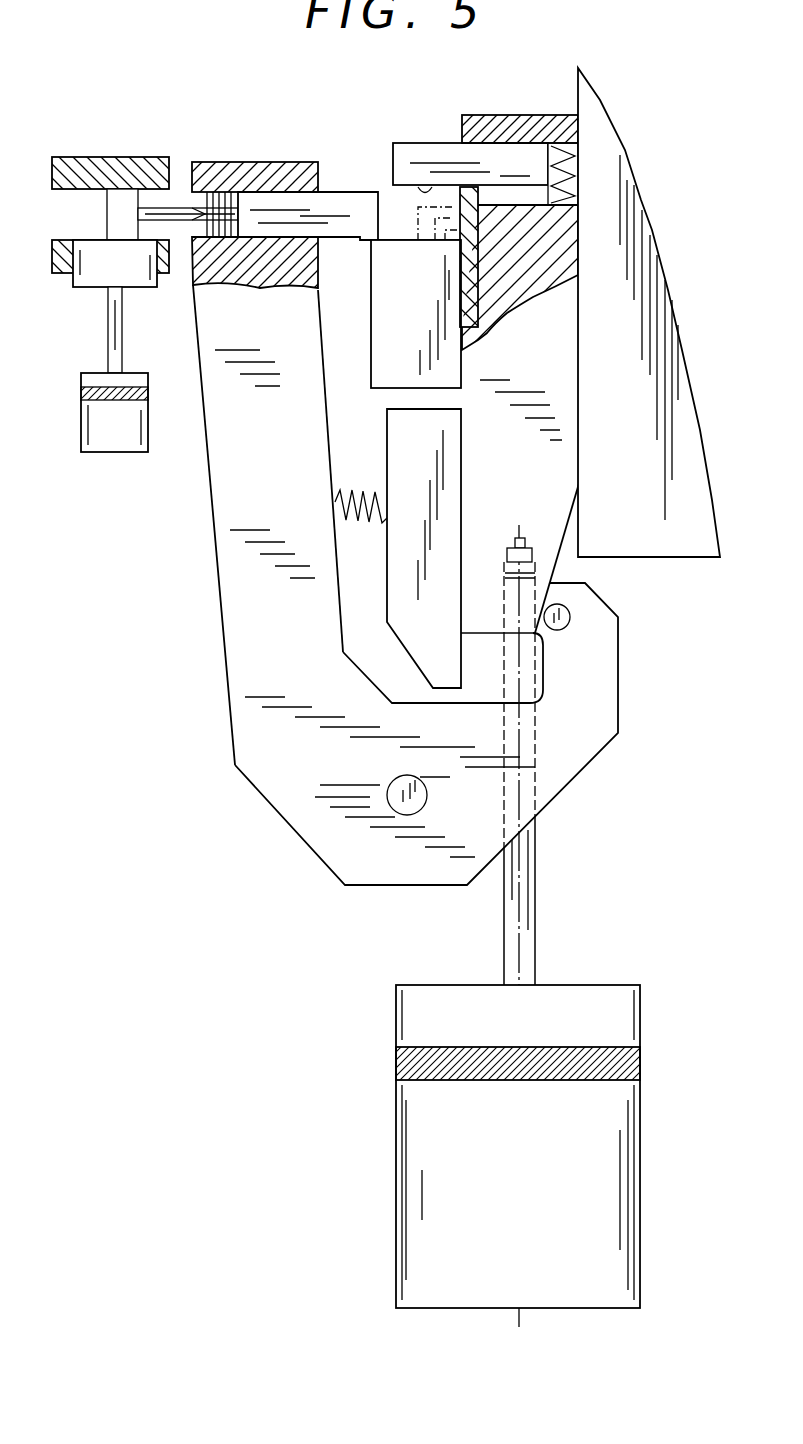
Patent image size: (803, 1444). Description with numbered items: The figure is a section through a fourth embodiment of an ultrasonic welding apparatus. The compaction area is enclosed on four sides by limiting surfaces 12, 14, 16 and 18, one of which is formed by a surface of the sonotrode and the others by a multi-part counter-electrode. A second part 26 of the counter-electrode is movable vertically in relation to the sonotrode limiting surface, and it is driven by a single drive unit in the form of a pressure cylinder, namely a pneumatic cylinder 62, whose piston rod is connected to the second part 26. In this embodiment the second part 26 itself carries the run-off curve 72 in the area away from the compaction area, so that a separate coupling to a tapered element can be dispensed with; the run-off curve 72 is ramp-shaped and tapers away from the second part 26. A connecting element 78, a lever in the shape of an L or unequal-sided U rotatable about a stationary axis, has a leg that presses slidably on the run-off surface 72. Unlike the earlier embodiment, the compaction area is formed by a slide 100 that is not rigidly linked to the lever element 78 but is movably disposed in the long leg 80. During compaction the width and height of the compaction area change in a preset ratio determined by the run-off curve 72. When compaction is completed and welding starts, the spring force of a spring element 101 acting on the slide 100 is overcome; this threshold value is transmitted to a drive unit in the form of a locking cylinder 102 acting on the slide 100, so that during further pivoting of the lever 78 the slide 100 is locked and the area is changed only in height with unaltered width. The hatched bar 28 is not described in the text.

The limiting surface 12 is at (403, 240).
The limiting surface 14 is at (383, 215).
The limiting surface 16 is at (455, 215).
The limiting surface 18 is at (440, 185).
The second part 26 is at (553, 368).
The hatched bar 28 is at (490, 160).
The pneumatic cylinder 62 is at (607, 1172).
The run-off surface 72 is at (560, 567).
The connecting element 78 is at (310, 778).
The long leg 80 is at (248, 630).
The slide 100 is at (260, 200).
The spring element 101 is at (190, 207).
The locking cylinder 102 is at (107, 443).